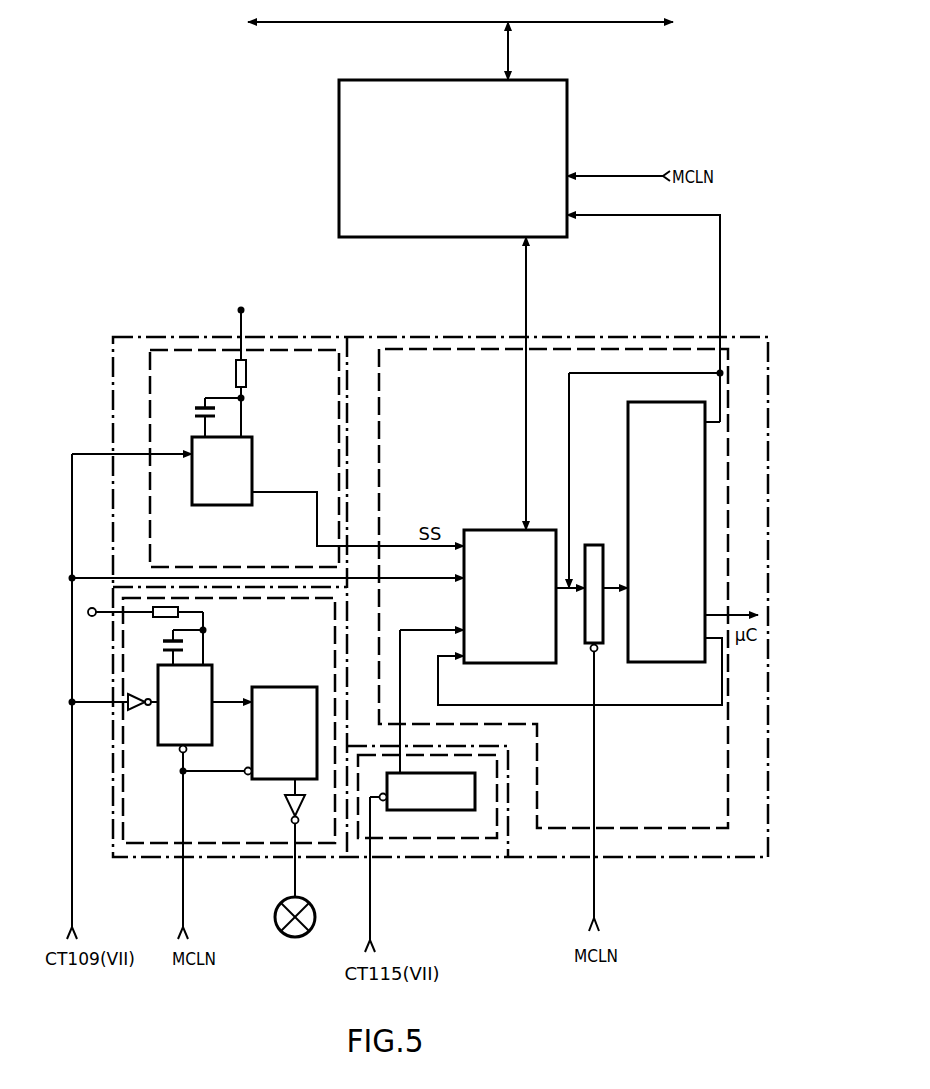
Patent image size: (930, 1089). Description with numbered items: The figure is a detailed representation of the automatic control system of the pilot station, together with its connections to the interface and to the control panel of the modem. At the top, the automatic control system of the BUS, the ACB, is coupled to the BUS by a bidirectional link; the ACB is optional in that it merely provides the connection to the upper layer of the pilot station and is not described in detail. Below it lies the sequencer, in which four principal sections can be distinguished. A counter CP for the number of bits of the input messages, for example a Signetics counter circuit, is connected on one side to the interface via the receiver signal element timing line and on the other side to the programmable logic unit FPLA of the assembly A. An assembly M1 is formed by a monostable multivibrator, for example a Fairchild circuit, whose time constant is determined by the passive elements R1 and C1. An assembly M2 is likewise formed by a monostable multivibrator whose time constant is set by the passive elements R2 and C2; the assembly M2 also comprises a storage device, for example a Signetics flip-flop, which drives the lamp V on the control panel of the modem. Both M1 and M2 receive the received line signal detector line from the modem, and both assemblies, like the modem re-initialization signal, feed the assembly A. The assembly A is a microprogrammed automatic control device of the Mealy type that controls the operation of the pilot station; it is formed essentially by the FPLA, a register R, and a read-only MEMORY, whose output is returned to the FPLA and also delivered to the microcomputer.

The assembly M1 is at (172, 368).
The assembly M2 is at (160, 825).
The passive element R1 is at (246, 374).
The passive element R2 is at (172, 605).
The passive element C1 is at (195, 411).
The passive element C2 is at (165, 645).
The assembly A is at (705, 822).
The counter CP is at (478, 828).
The lamp V is at (332, 913).
The read-only memory MEMORY is at (674, 392).
The programmable logic unit FPLA is at (510, 596).
The register R is at (594, 738).
The automatic control system of the BUS ACB is at (453, 158).
The element BUS is at (460, 40).